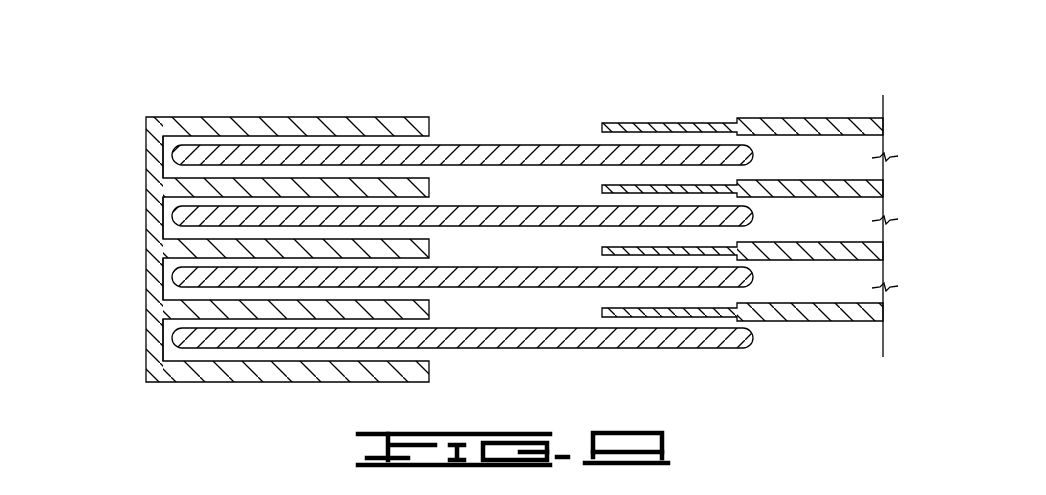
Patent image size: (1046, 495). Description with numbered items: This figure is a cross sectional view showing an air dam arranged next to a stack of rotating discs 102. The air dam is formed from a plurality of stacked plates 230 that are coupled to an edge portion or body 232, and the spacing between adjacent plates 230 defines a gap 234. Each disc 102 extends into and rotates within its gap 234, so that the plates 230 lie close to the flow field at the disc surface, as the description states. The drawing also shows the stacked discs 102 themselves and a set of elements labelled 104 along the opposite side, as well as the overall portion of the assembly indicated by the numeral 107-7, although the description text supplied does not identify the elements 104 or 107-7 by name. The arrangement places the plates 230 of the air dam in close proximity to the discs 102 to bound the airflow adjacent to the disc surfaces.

The discs 102 is at (517, 218).
The fin plate 104 is at (840, 117).
The heat sink assembly 107-7 is at (270, 113).
The stacked plates 230 is at (177, 128).
The edge portion or body 232 is at (162, 170).
The gap 234 is at (375, 128).